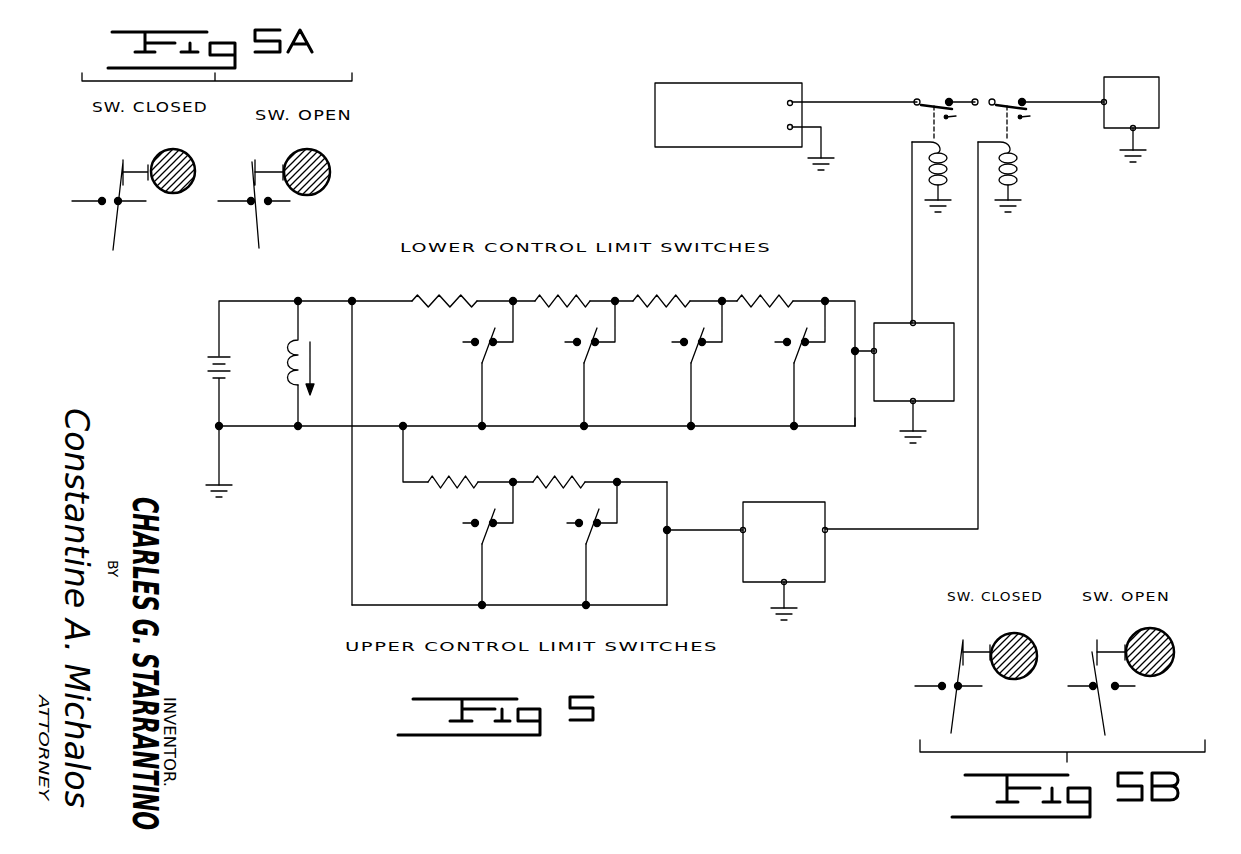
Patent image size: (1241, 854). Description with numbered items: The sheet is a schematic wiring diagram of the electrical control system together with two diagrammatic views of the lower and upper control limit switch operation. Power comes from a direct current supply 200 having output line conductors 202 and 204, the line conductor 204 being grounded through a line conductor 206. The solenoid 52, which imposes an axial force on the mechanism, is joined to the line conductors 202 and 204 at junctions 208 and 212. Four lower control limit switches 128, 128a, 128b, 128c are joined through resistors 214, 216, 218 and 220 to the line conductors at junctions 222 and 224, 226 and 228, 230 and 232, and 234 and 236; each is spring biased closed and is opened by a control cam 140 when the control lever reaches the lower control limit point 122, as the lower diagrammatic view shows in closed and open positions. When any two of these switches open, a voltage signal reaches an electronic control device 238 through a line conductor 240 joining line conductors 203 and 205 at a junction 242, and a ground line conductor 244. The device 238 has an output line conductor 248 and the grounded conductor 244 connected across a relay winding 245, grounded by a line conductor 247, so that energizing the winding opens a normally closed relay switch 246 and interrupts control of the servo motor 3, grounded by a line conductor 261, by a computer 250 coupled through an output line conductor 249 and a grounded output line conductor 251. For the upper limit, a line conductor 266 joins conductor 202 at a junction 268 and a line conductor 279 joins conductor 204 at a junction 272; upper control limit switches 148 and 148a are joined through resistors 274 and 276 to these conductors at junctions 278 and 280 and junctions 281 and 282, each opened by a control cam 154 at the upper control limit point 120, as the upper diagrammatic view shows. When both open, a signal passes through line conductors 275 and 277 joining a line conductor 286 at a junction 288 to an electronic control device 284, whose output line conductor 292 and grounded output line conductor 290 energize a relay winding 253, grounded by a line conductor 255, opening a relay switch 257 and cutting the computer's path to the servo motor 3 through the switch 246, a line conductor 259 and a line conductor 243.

In FIG. 5, the servo motor 3 is at (1159, 78).
In FIG. 5, the solenoid 52 is at (296, 378).
In FIG. 5B, the upper control limit point 120 is at (1003, 680).
In FIG. 5A, the lower control limit point 122 is at (184, 148).
In FIG. 5, the lower control limit switch 128 is at (492, 352).
In FIG. 5A, the lower control limit switch 128 is at (110, 196).
In FIG. 5, the lower control limit switch 128a is at (594, 352).
In FIG. 5, the lower control limit switch 128b is at (701, 352).
In FIG. 5, the lower control limit switch 128c is at (805, 352).
In FIG. 5A, the control cam 140 is at (198, 176).
In FIG. 5, the upper control limit switch 148 is at (490, 532).
In FIG. 5B, the upper control limit switch 148 is at (944, 690).
In FIG. 5, the upper control limit switch 148a is at (596, 535).
In FIG. 5B, the control cam 154 is at (1037, 650).
In FIG. 5, the direct current supply 200 is at (215, 380).
In FIG. 5, the output line conductor 202 is at (244, 278).
In FIG. 5, the line conductor 203 is at (840, 298).
In FIG. 5, the output line conductor 204 is at (272, 428).
In FIG. 5, the line conductor 205 is at (830, 427).
In FIG. 5, the line conductor 206 is at (219, 457).
In FIG. 5, the junction 208 is at (298, 301).
In FIG. 5, the junction 212 is at (298, 430).
In FIG. 5, the resistor 214 is at (445, 308).
In FIG. 5, the resistor 216 is at (565, 308).
In FIG. 5, the resistor 218 is at (662, 308).
In FIG. 5, the resistor 220 is at (770, 308).
In FIG. 5, the junction 222 is at (513, 301).
In FIG. 5, the junction 224 is at (482, 430).
In FIG. 5, the junction 226 is at (615, 301).
In FIG. 5, the junction 228 is at (584, 428).
In FIG. 5, the junction 230 is at (722, 301).
In FIG. 5, the junction 232 is at (692, 428).
In FIG. 5, the junction 234 is at (826, 299).
In FIG. 5, the junction 236 is at (796, 428).
In FIG. 5, the electronic control device 238 is at (954, 367).
In FIG. 5, the line conductor 240 is at (858, 348).
In FIG. 5, the junction 242 is at (856, 427).
In FIG. 5, the line conductor 243 is at (1056, 98).
In FIG. 5, the ground line conductor 244 is at (918, 419).
In FIG. 5, the relay winding 245 is at (946, 165).
In FIG. 5, the relay switch 246 is at (926, 100).
In FIG. 5, the line conductor 247 is at (943, 200).
In FIG. 5, the output line conductor 248 is at (912, 225).
In FIG. 5, the output line conductor 249 is at (845, 102).
In FIG. 5, the computer 250 is at (746, 143).
In FIG. 5, the grounded output line conductor 251 is at (826, 143).
In FIG. 5, the relay winding 253 is at (1017, 165).
In FIG. 5, the line conductor 255 is at (1013, 197).
In FIG. 5, the relay switch 257 is at (999, 100).
In FIG. 5, the line conductor 259 is at (960, 100).
In FIG. 5, the line conductor 261 is at (1137, 135).
In FIG. 5, the line conductor 266 is at (352, 567).
In FIG. 5, the junction 268 is at (352, 301).
In FIG. 5, the junction 272 is at (403, 424).
In FIG. 5, the resistor 274 is at (447, 488).
In FIG. 5, the line conductor 275 is at (648, 484).
In FIG. 5, the resistor 276 is at (553, 488).
In FIG. 5, the line conductor 277 is at (660, 607).
In FIG. 5, the junction 278 is at (513, 480).
In FIG. 5, the line conductor 279 is at (403, 462).
In FIG. 5, the junction 280 is at (480, 607).
In FIG. 5, the junction 281 is at (620, 480).
In FIG. 5, the junction 282 is at (587, 607).
In FIG. 5, the electronic control device 284 is at (820, 503).
In FIG. 5, the line conductor 286 is at (705, 528).
In FIG. 5, the junction 288 is at (670, 534).
In FIG. 5, the grounded output line conductor 290 is at (792, 598).
In FIG. 5, the output line conductor 292 is at (978, 505).